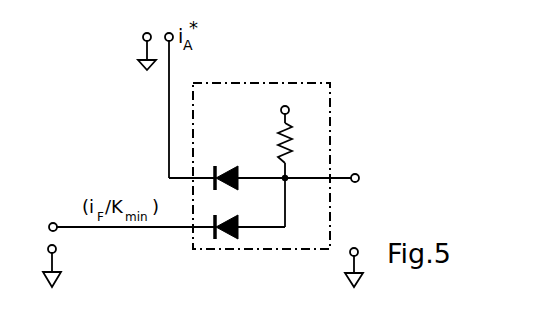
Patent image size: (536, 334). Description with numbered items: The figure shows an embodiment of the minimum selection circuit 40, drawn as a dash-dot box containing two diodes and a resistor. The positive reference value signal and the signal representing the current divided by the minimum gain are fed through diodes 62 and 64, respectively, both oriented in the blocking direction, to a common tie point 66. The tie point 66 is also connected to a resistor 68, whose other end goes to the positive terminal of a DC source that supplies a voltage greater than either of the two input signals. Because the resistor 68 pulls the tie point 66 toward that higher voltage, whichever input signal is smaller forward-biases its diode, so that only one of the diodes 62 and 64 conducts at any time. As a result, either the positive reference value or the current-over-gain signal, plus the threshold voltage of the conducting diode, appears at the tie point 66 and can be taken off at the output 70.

The minimum selection circuit 40 is at (318, 103).
The diode 62 is at (240, 166).
The diode 64 is at (243, 218).
The tie point 66 is at (287, 181).
The resistor 68 is at (291, 143).
The output 70 is at (359, 178).